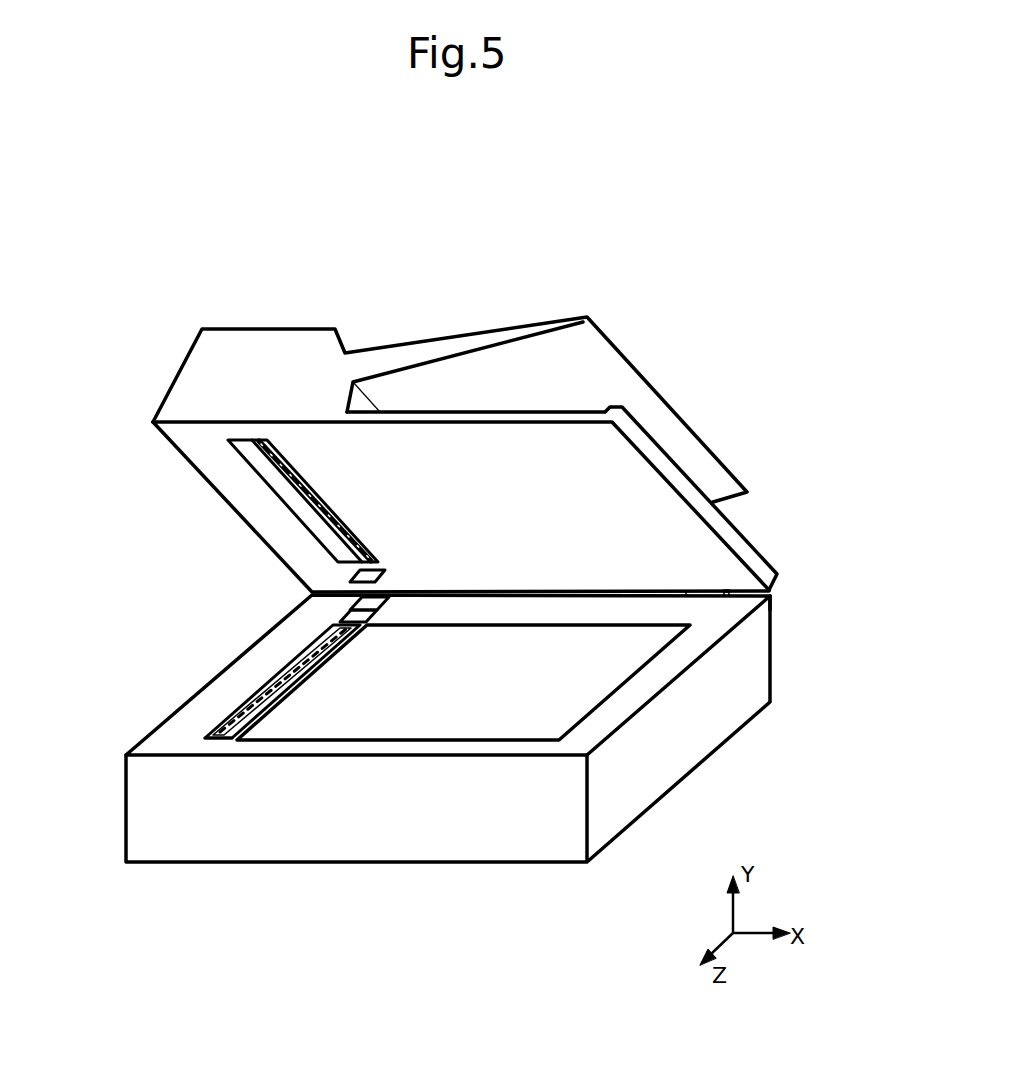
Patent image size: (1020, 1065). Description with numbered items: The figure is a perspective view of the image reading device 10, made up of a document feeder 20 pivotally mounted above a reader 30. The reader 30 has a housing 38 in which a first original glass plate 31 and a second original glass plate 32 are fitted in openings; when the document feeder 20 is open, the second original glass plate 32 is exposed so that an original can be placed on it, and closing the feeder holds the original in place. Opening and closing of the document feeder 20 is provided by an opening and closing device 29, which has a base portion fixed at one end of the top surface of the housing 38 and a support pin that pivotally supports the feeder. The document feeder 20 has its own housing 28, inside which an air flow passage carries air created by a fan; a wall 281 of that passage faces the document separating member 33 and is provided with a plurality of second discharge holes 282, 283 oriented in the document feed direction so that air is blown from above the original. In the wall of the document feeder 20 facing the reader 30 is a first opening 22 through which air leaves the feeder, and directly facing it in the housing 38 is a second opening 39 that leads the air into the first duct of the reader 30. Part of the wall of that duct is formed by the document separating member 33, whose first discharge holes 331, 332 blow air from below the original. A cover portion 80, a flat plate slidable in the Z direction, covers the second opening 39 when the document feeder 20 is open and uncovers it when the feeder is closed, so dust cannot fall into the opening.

The image reading device 10 is at (440, 290).
The document feeder 20 is at (767, 408).
The first opening 22 is at (348, 578).
The housing of the document feeder 28 is at (708, 582).
The wall 281 is at (278, 457).
The second discharge holes 282 is at (320, 508).
The second discharge holes 283 is at (347, 542).
The opening and closing device 29 is at (723, 588).
The reader 30 is at (733, 780).
The first original glass plate 31 is at (222, 740).
The second original glass plate 32 is at (615, 672).
The document separating member 33 is at (220, 742).
The first discharge holes 331 is at (280, 712).
The first discharge holes 332 is at (320, 657).
The housing of the reader 38 is at (772, 597).
The second opening 39 is at (340, 615).
The cover portion 80 is at (350, 603).